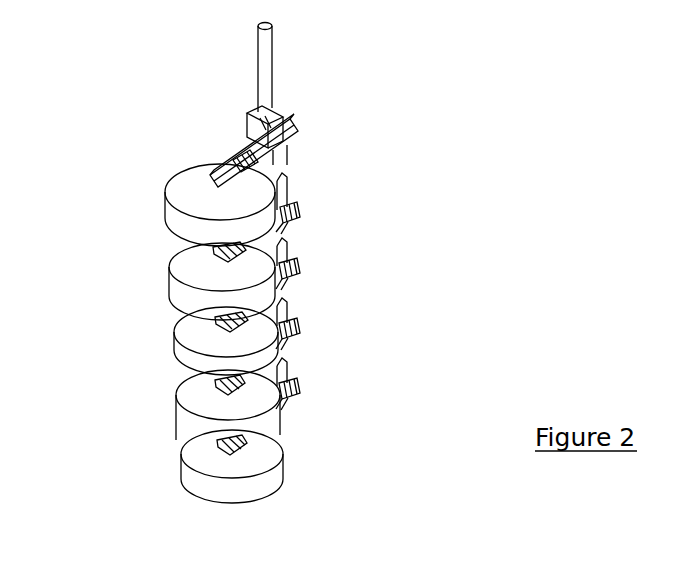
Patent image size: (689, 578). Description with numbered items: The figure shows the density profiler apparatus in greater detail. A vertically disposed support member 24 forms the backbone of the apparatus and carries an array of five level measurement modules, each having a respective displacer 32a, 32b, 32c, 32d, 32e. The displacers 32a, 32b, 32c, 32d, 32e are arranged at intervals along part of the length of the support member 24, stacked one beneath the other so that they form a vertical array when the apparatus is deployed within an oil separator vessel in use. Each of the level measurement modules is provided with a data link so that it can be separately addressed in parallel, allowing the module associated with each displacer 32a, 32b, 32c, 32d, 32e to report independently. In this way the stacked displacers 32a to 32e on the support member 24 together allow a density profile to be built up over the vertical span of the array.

The support member 24 is at (260, 90).
The displacer 32a is at (166, 219).
The displacer 32b is at (175, 286).
The displacer 32c is at (177, 352).
The displacer 32d is at (178, 398).
The displacer 32e is at (180, 457).